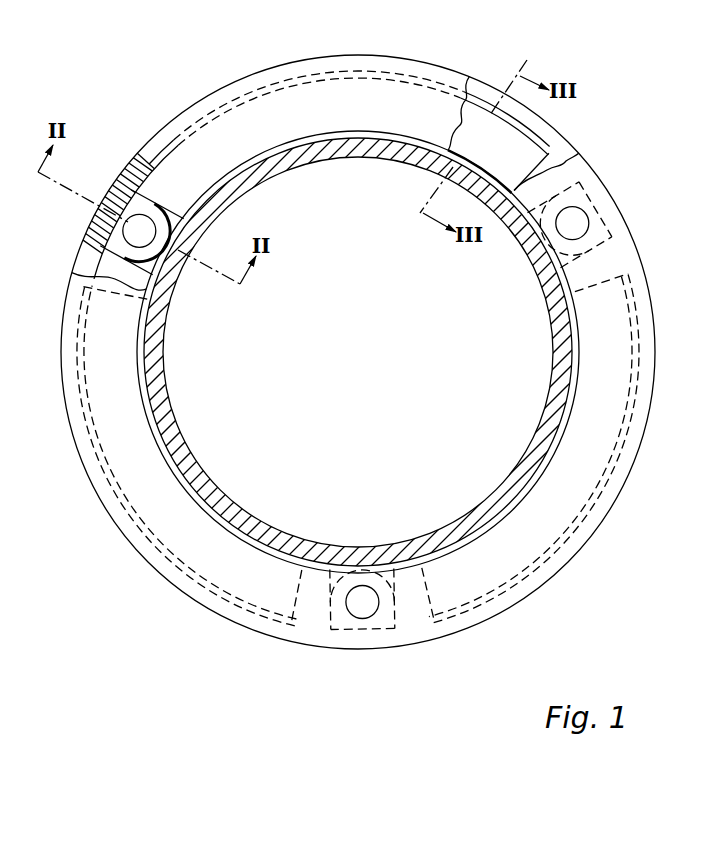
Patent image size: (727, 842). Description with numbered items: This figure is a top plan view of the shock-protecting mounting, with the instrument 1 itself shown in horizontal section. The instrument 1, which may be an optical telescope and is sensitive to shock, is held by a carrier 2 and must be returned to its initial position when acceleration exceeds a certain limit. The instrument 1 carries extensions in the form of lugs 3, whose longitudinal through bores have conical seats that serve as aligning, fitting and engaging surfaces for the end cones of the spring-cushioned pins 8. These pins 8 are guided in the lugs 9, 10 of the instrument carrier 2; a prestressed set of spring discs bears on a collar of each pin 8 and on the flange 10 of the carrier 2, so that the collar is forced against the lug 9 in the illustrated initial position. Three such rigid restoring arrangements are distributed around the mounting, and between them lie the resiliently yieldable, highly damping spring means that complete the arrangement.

The instrument 1 is at (166, 391).
The carrier 2 is at (204, 613).
The lugs 3 is at (176, 218).
The spring-cushioned pins 8 is at (138, 223).
The lug 9 is at (115, 240).
The lug (flange) 10 is at (148, 487).